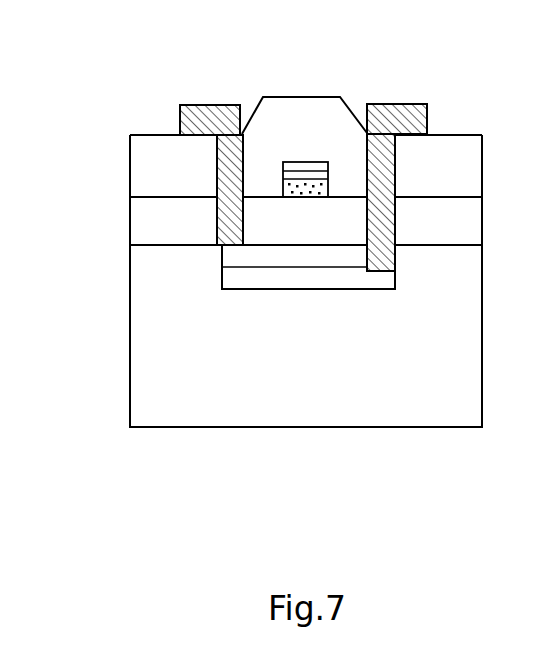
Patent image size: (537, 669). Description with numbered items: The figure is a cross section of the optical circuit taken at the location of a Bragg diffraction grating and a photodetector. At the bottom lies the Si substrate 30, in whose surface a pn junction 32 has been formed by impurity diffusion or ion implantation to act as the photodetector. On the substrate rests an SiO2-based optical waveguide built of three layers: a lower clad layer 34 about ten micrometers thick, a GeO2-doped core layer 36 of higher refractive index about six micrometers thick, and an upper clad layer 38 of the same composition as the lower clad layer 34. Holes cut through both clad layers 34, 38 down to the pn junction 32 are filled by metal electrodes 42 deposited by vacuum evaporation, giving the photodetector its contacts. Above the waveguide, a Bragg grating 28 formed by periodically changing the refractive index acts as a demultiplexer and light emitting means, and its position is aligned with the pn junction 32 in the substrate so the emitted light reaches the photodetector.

The Bragg grating 28 is at (307, 162).
The Si substrate 30 is at (292, 397).
The pn junction 32 is at (235, 274).
The lower clad layer 34 is at (152, 228).
The core layer 36 is at (320, 182).
The upper clad layer 38 is at (152, 161).
The metal electrodes 42 is at (212, 105).